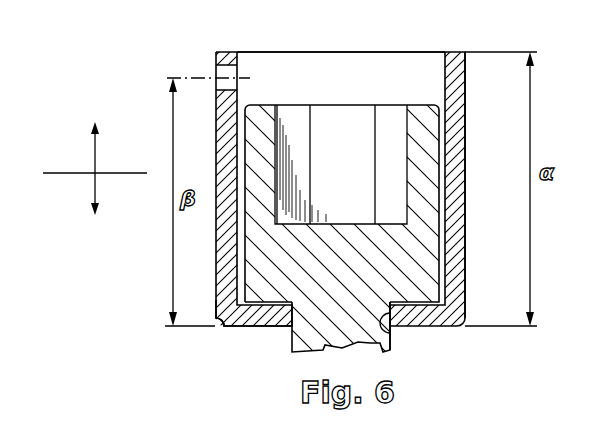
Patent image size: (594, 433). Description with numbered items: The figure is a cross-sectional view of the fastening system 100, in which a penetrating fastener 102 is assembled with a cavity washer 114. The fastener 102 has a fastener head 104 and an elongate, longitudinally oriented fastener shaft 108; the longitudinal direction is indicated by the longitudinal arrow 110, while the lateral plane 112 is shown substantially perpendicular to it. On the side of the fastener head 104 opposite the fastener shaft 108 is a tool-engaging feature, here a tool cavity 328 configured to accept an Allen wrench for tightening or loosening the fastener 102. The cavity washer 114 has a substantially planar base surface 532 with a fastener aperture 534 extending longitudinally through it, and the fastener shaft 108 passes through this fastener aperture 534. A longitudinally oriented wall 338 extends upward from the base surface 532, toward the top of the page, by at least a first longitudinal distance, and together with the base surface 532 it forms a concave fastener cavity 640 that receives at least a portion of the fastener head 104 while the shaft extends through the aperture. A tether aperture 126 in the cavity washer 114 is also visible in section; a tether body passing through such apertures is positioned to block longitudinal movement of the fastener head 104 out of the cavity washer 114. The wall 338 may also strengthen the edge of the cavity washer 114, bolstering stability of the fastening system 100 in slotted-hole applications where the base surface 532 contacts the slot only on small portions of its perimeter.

The fastening system 100 is at (468, 101).
The penetrating fastener 102 is at (393, 344).
The fastener head 104 is at (378, 96).
The fastener shaft 108 is at (288, 343).
The longitudinal arrow 110 is at (97, 156).
The lateral plane 112 is at (124, 173).
The cavity washer 114 is at (466, 249).
The tether aperture 126 is at (221, 72).
The tool cavity 328 is at (350, 143).
The longitudinally oriented wall 338 is at (455, 148).
The base surface 532 is at (234, 331).
The fastener aperture 534 is at (394, 340).
The concave fastener cavity 640 is at (275, 72).